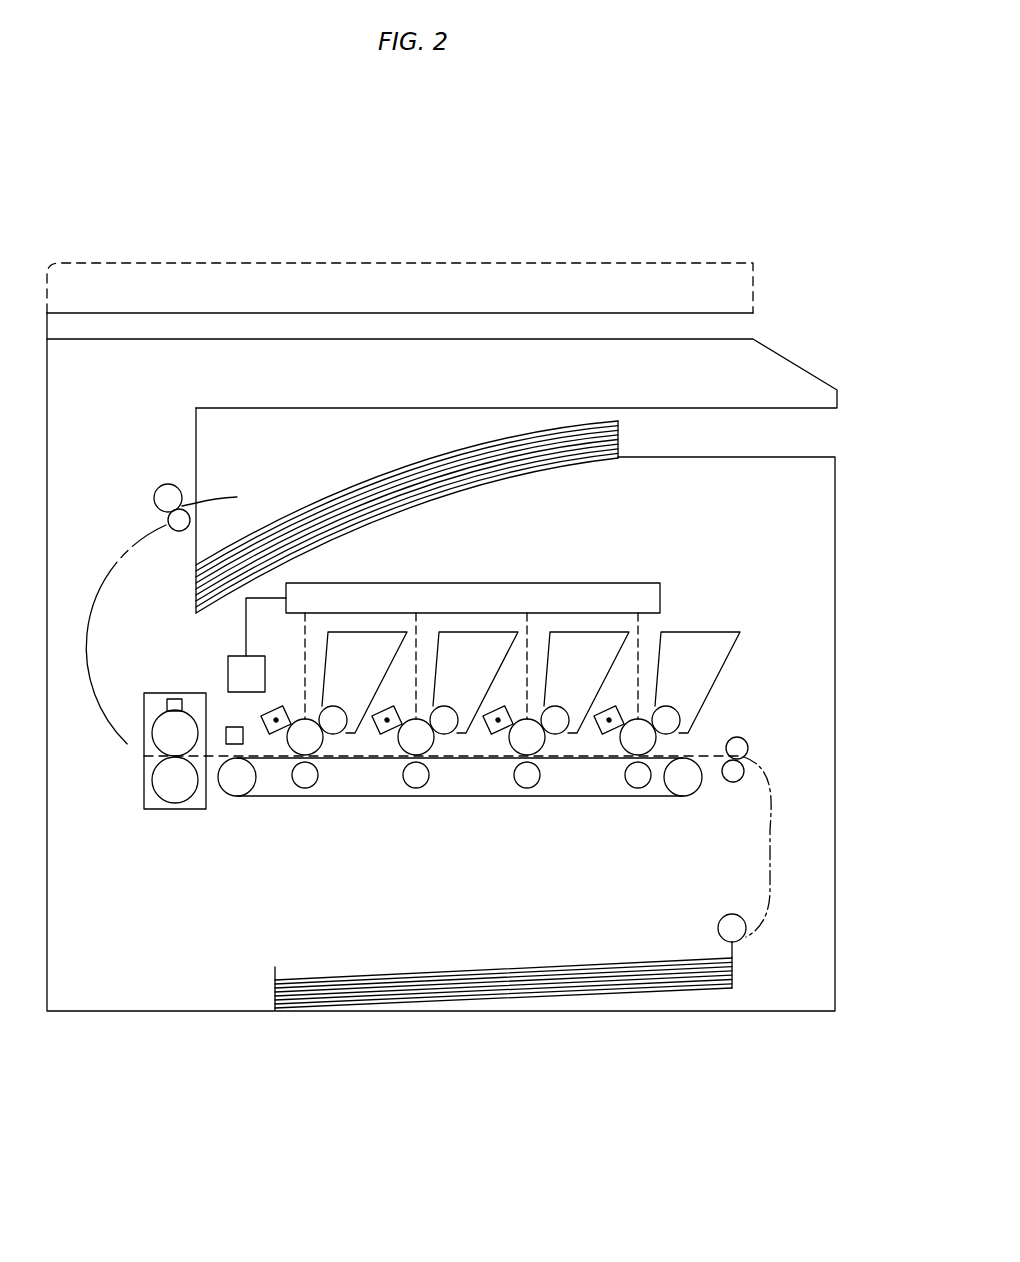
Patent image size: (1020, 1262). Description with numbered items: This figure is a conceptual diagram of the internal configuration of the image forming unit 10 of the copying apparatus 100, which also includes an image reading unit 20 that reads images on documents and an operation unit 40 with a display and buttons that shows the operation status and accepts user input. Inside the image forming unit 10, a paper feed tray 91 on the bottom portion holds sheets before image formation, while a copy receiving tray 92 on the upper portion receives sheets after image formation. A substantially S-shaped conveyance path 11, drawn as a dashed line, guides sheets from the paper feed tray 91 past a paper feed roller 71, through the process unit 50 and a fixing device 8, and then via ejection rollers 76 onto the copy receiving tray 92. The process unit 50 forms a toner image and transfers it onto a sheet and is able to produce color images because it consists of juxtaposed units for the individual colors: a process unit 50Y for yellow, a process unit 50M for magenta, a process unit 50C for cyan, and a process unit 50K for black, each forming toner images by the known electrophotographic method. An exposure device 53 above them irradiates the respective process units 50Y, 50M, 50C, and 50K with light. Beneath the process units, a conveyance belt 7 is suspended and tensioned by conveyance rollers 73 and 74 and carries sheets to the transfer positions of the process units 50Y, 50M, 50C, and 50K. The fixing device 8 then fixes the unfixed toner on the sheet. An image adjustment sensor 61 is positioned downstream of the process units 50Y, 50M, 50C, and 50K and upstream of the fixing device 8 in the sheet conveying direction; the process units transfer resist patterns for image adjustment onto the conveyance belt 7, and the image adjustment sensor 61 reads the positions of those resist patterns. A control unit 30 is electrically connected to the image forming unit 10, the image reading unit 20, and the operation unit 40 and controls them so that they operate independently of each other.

The copying apparatus 100 is at (667, 228).
The image reading unit 20 is at (156, 263).
The operation unit 40 is at (800, 362).
The image forming unit 10 is at (783, 522).
The ejection rollers 76 is at (169, 492).
The copy receiving tray 92 is at (392, 500).
The exposure device 53 is at (598, 583).
The control unit 30 is at (232, 660).
The image adjustment sensor 61 is at (232, 727).
The fixing device 8 is at (176, 809).
The conveyance roller 74 is at (237, 790).
The conveyance belt 7 is at (272, 800).
The conveyance roller 73 is at (685, 790).
The process unit 50 is at (640, 880).
The process unit 50Y is at (332, 800).
The process unit 50M is at (425, 800).
The process unit 50C is at (530, 800).
The process unit 50K is at (630, 800).
The conveyance path 11 is at (772, 830).
The paper feed roller 71 is at (721, 925).
The paper feed tray 91 is at (542, 980).